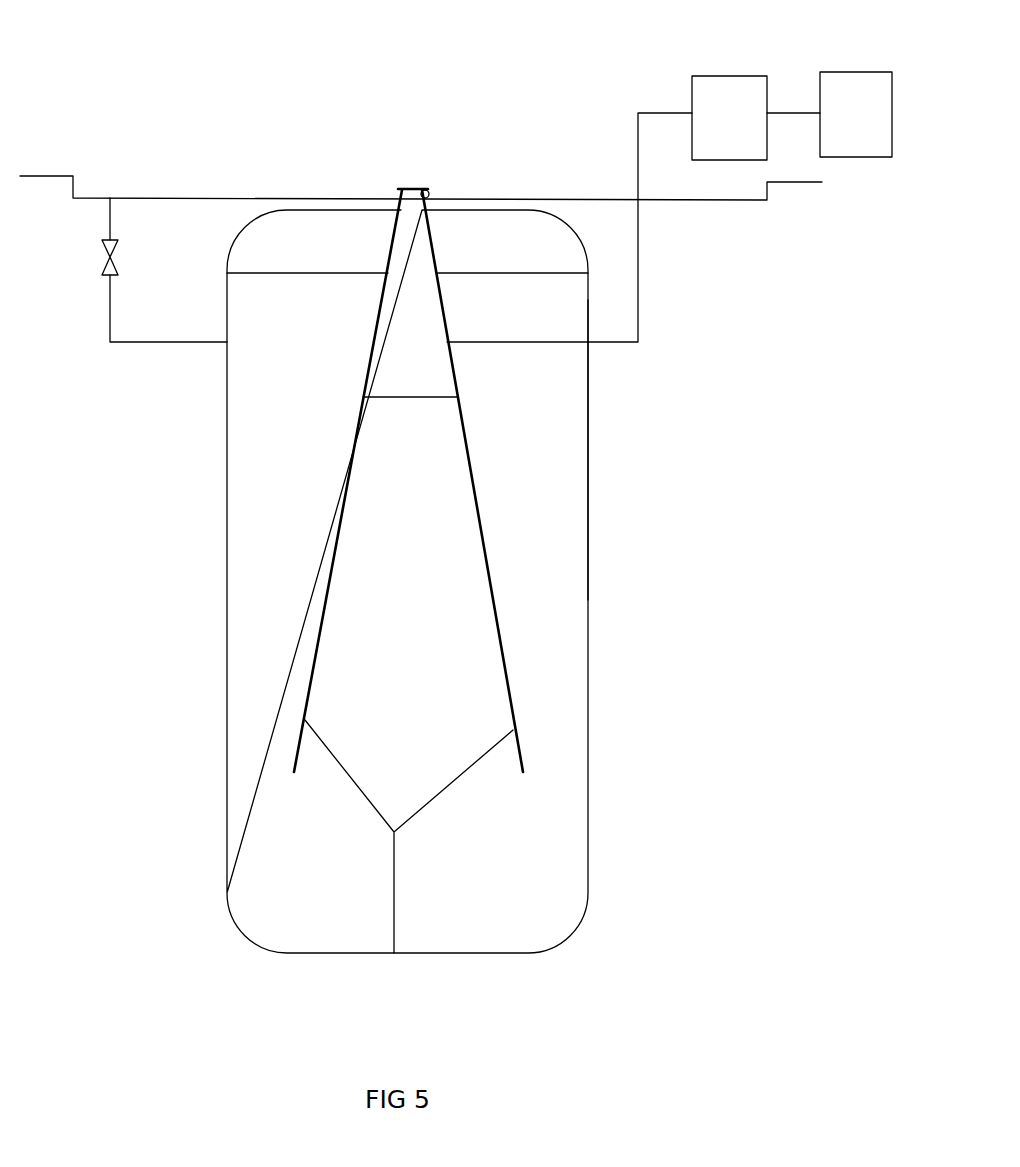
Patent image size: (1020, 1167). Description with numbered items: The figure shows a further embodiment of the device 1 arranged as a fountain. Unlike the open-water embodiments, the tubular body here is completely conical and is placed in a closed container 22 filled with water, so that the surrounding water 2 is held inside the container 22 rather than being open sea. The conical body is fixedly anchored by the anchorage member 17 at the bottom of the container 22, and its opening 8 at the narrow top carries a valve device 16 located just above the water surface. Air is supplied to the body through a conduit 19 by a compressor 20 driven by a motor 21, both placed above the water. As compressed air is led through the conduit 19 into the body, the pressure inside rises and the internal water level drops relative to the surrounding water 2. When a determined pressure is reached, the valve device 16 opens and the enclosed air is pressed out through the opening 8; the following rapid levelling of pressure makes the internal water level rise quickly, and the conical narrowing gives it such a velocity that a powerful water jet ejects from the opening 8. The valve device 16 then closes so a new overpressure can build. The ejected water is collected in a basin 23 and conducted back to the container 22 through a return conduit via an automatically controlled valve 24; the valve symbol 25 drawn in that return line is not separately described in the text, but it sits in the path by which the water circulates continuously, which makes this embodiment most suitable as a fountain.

The device 1 is at (163, 432).
The surrounding water 2 is at (535, 493).
The opening 8 is at (402, 188).
The valve device 16 is at (427, 188).
The resilient anchorage member 17 is at (435, 795).
The conduit 19 is at (638, 238).
The compressor 20 is at (724, 87).
The motor 21 is at (848, 93).
The closed container 22 is at (588, 433).
The basin 23 is at (153, 182).
The automatically controlled valve 24 is at (110, 320).
The valve 25 is at (106, 248).